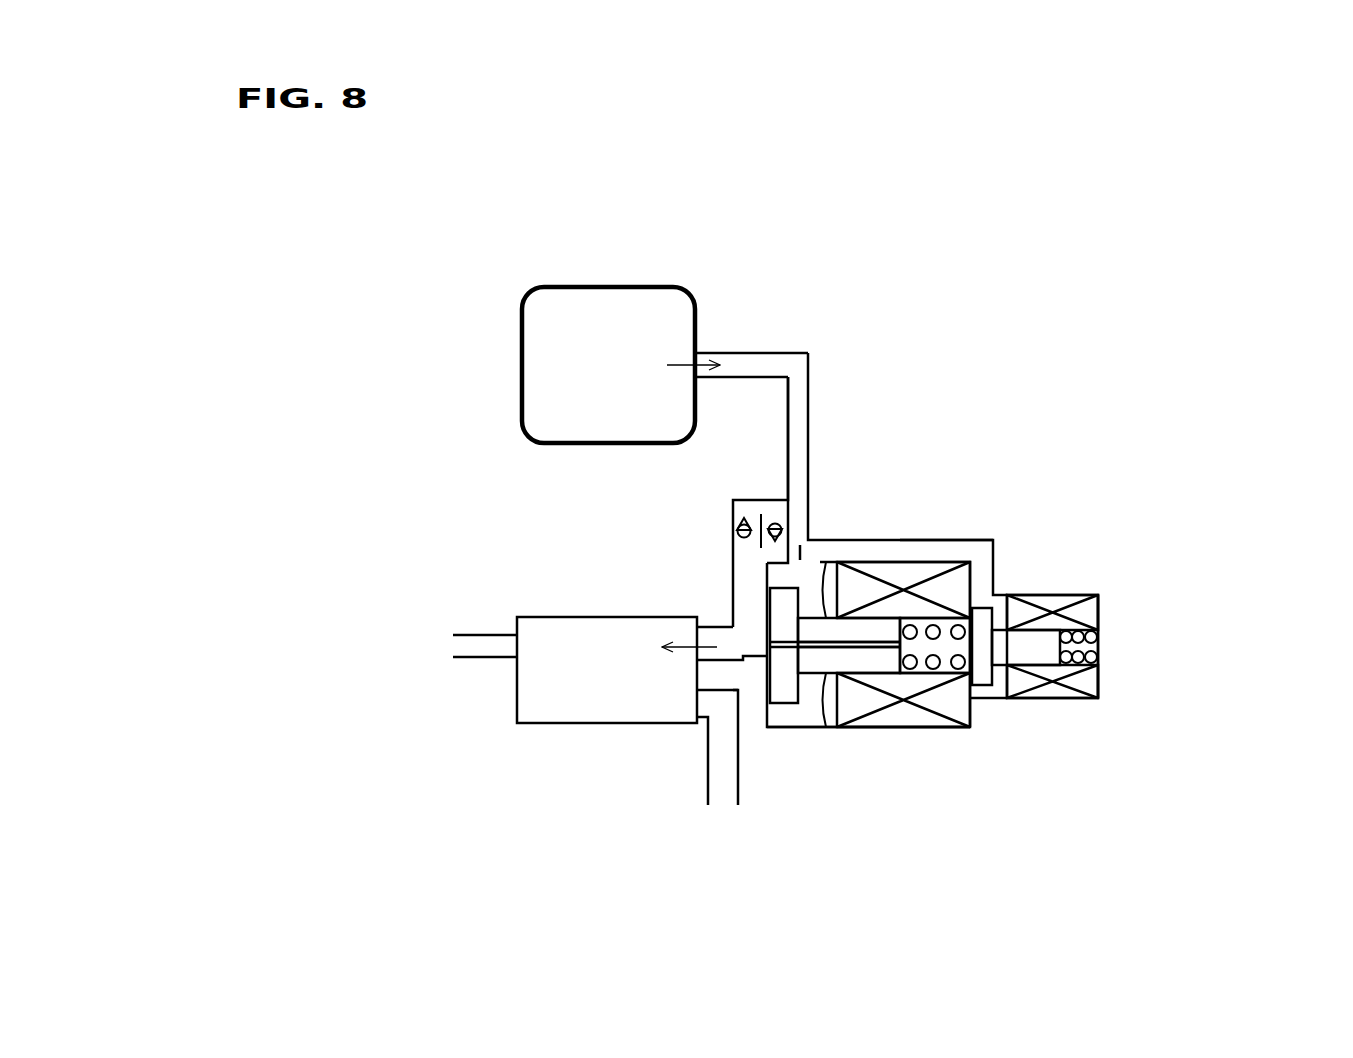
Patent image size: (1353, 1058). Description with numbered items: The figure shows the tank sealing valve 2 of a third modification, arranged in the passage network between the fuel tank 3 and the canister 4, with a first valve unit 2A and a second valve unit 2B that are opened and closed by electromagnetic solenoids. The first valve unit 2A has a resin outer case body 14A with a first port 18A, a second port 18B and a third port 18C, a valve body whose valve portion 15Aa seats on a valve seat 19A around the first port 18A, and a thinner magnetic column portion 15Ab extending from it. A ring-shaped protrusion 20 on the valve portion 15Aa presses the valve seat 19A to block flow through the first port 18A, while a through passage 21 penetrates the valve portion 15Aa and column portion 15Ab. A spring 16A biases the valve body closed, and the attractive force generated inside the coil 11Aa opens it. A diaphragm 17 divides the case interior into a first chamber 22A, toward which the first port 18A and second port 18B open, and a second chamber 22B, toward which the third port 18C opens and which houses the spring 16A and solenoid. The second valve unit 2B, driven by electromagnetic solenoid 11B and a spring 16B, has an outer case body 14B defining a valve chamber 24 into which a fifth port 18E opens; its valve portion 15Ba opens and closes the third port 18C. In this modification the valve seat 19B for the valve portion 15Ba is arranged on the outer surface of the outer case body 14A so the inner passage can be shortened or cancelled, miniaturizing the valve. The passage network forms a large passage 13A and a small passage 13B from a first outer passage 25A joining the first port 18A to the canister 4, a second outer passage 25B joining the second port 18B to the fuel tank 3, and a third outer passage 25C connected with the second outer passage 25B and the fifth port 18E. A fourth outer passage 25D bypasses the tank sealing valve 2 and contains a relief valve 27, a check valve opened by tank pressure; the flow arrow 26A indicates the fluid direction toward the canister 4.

The tank sealing valve 2 is at (1250, 255).
The first valve unit 2A is at (865, 753).
The second valve unit 2B is at (1127, 440).
The fuel tank 3 is at (522, 364).
The canister 4 is at (527, 708).
The coil 11Aa is at (868, 565).
The electromagnetic solenoid 11B is at (1055, 603).
The large passage 13A is at (822, 483).
The small passage 13B is at (957, 513).
The outer case body 14A is at (807, 730).
The outer case body 14B is at (1090, 592).
The valve portion 15Aa is at (778, 607).
The column portion 15Ab is at (900, 672).
The valve portion 15Ba is at (1100, 670).
The spring 16A is at (935, 668).
The spring 16B is at (1100, 637).
The diaphragm 17 is at (835, 707).
The first port 18A is at (740, 633).
The second port 18B is at (800, 560).
The third port 18C is at (943, 615).
The fifth port 18E is at (979, 600).
The valve seat 19A is at (783, 703).
The valve seat 19B is at (991, 605).
The protrusion 20 is at (740, 690).
The through passage 21 is at (891, 663).
The first chamber 22A is at (788, 717).
The second chamber 22B is at (980, 672).
The valve chamber 24 is at (998, 620).
The first outer passage 25A is at (707, 633).
The second outer passage 25B is at (793, 418).
The third outer passage 25C is at (888, 565).
The fourth outer passage 25D is at (753, 577).
The orifice 26A is at (722, 648).
The relief valve 27 is at (720, 497).